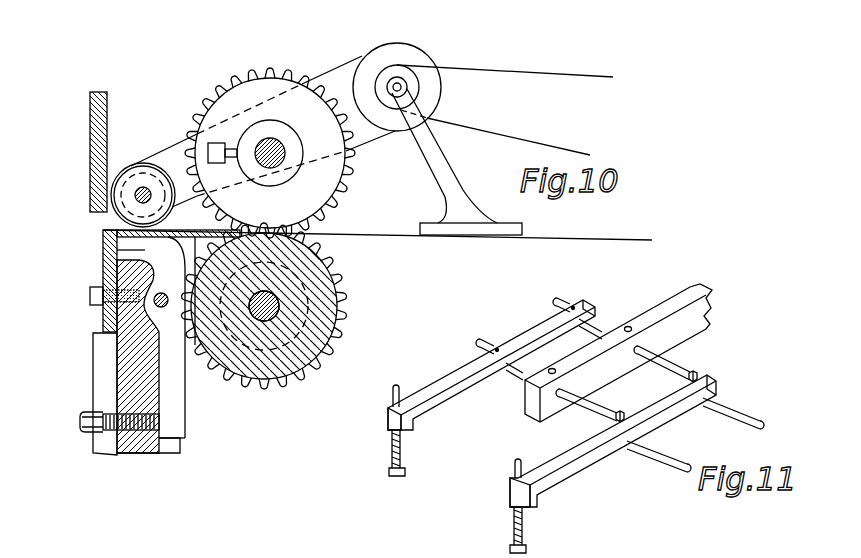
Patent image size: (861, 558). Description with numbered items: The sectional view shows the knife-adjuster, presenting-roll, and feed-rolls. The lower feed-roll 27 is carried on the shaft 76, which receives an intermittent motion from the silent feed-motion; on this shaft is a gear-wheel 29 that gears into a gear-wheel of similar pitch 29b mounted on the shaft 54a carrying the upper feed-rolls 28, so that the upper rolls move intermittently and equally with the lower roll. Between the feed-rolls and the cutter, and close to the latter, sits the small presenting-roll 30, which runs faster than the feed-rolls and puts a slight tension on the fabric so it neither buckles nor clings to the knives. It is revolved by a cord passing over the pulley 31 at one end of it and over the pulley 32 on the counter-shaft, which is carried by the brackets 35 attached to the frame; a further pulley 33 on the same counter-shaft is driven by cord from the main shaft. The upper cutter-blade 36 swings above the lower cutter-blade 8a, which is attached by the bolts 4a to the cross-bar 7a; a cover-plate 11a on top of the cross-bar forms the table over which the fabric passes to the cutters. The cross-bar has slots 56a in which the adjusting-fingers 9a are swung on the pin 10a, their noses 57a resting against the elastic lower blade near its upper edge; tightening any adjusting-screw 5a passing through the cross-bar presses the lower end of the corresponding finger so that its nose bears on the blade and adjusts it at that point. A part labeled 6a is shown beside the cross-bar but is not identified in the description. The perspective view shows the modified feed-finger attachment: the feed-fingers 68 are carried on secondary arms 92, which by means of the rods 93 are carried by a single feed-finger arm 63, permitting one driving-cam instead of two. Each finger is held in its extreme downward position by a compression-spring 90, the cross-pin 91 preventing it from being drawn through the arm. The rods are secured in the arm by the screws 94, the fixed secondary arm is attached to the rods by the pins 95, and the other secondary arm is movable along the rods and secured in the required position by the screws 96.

In FIG. 10, the upper cutter-blade 36 is at (90, 112).
In FIG. 10, the presenting-roll 30 is at (140, 163).
In FIG. 10, the pulley 31 is at (128, 203).
In FIG. 10, the upper feed-rolls 28 is at (232, 102).
In FIG. 10, the gear-wheel 29b is at (285, 76).
In FIG. 10, the shaft 54a is at (270, 140).
In FIG. 10, the pulley 32 is at (384, 52).
In FIG. 10, the pulley 33 is at (413, 85).
In FIG. 10, the brackets 35 is at (452, 182).
In FIG. 10, the cover-plate 11a is at (200, 219).
In FIG. 10, the lower cutter-blade 8a is at (105, 252).
In FIG. 10, the cross-bar 7a is at (130, 455).
In FIG. 10, the noses 57a is at (145, 250).
In FIG. 10, the pin 10a is at (165, 290).
In FIG. 10, the adjusting-fingers 9a is at (173, 425).
In FIG. 10, the slots 56a is at (176, 448).
In FIG. 10, the side plate 6a is at (102, 343).
In FIG. 10, the bolts 4a is at (90, 298).
In FIG. 10, the adjusting-screws 5a is at (80, 415).
In FIG. 10, the lower feed-roll 27 is at (273, 375).
In FIG. 10, the gear-wheel 29 is at (347, 254).
In FIG. 10, the shaft 76 is at (267, 295).
In FIG. 11, the feed-finger arm 63 is at (703, 315).
In FIG. 11, the screws 94 is at (628, 327).
In FIG. 11, the secondary arms 92 is at (452, 388).
In FIG. 11, the cross-pin 91 is at (392, 404).
In FIG. 11, the feed-fingers 68 is at (397, 386).
In FIG. 11, the compression-spring 90 is at (392, 452).
In FIG. 11, the pins 95 is at (573, 306).
In FIG. 11, the rods 93 is at (670, 370).
In FIG. 11, the screws 96 is at (622, 413).